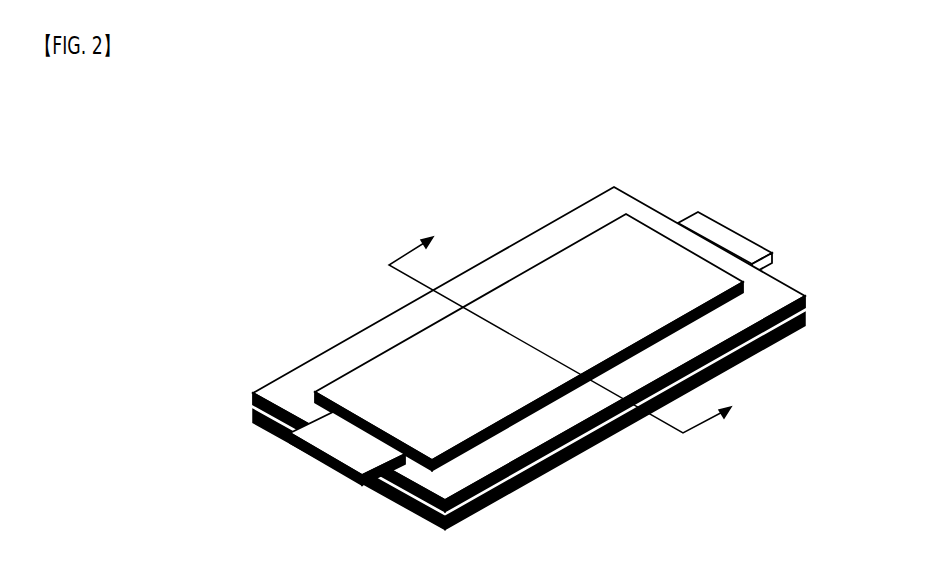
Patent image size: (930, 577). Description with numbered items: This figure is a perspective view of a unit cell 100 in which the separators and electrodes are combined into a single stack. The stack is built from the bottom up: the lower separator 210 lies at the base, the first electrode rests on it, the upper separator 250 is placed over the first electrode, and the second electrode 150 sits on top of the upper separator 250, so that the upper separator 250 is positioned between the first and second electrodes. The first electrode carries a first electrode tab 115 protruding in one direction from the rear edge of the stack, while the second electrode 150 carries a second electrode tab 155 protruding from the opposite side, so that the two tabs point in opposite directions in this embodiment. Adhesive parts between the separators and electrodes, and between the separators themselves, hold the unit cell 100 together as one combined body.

The unit cell 100 is at (518, 125).
The first electrode tab 115 is at (720, 238).
The second electrode 150 is at (401, 362).
The second electrode tab 155 is at (347, 453).
The lower separator 210 is at (263, 425).
The upper separator 250 is at (300, 379).